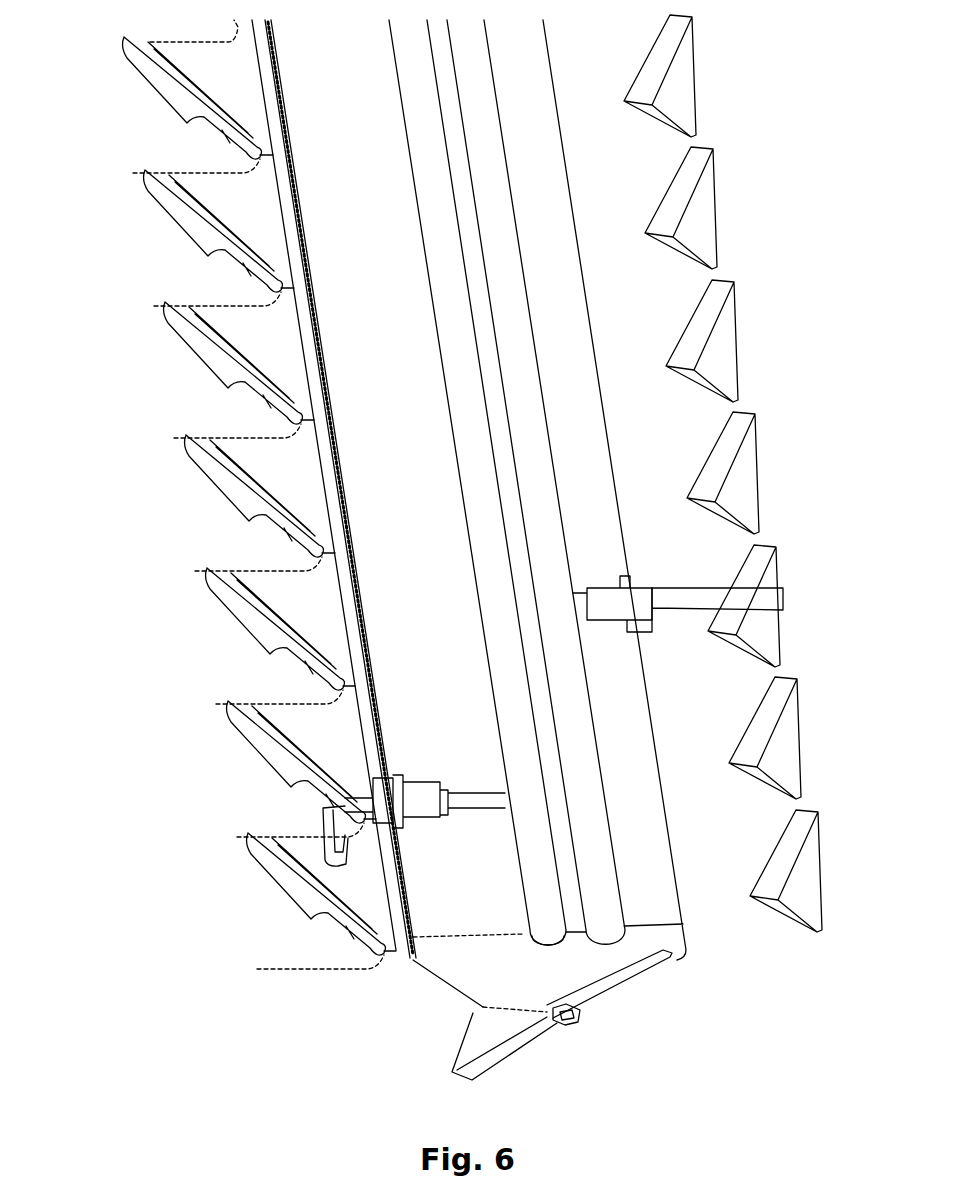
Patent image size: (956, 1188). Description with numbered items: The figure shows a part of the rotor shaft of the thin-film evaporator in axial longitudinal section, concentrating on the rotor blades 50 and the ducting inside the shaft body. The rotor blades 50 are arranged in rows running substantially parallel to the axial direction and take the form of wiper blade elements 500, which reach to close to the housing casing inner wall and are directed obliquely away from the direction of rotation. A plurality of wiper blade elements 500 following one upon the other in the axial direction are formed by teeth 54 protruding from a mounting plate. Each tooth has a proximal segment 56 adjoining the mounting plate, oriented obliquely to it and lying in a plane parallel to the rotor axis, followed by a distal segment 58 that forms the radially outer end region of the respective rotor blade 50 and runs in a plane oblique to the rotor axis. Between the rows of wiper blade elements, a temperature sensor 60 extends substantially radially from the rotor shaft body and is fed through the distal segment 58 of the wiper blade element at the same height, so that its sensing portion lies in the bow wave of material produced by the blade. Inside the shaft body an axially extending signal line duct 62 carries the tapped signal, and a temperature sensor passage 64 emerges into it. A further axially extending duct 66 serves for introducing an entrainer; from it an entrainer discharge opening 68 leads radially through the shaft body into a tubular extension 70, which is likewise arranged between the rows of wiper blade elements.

The rotor blade 50 is at (446, 494).
The wiper blade element 500 is at (465, 494).
The teeth 54 is at (262, 403).
The proximal segment 56 is at (287, 570).
The distal segment 58 is at (287, 665).
The temperature sensor 60 is at (712, 488).
The signal line duct 62 is at (590, 549).
The temperature sensor passage 64 is at (593, 603).
The duct 66 is at (547, 918).
The entrainer discharge opening 68 is at (470, 793).
The tubular extension 70 is at (323, 817).